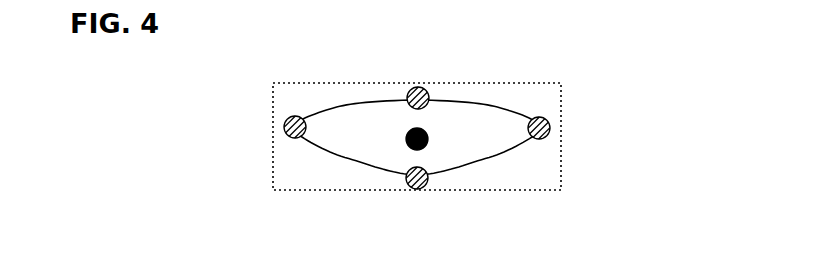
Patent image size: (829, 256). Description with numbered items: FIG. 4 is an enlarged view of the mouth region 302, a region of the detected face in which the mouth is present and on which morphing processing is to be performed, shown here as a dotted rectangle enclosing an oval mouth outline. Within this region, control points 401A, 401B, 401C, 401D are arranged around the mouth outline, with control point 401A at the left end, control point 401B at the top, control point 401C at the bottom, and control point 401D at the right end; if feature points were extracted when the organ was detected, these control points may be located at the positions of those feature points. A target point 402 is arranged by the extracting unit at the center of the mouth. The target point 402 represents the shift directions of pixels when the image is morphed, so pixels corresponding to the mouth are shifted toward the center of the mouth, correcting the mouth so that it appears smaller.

The mouth region 302 is at (516, 81).
The control point 401A is at (287, 120).
The control point 401B is at (412, 88).
The control point 401C is at (413, 188).
The control point 401D is at (551, 118).
The target point 402 is at (430, 137).